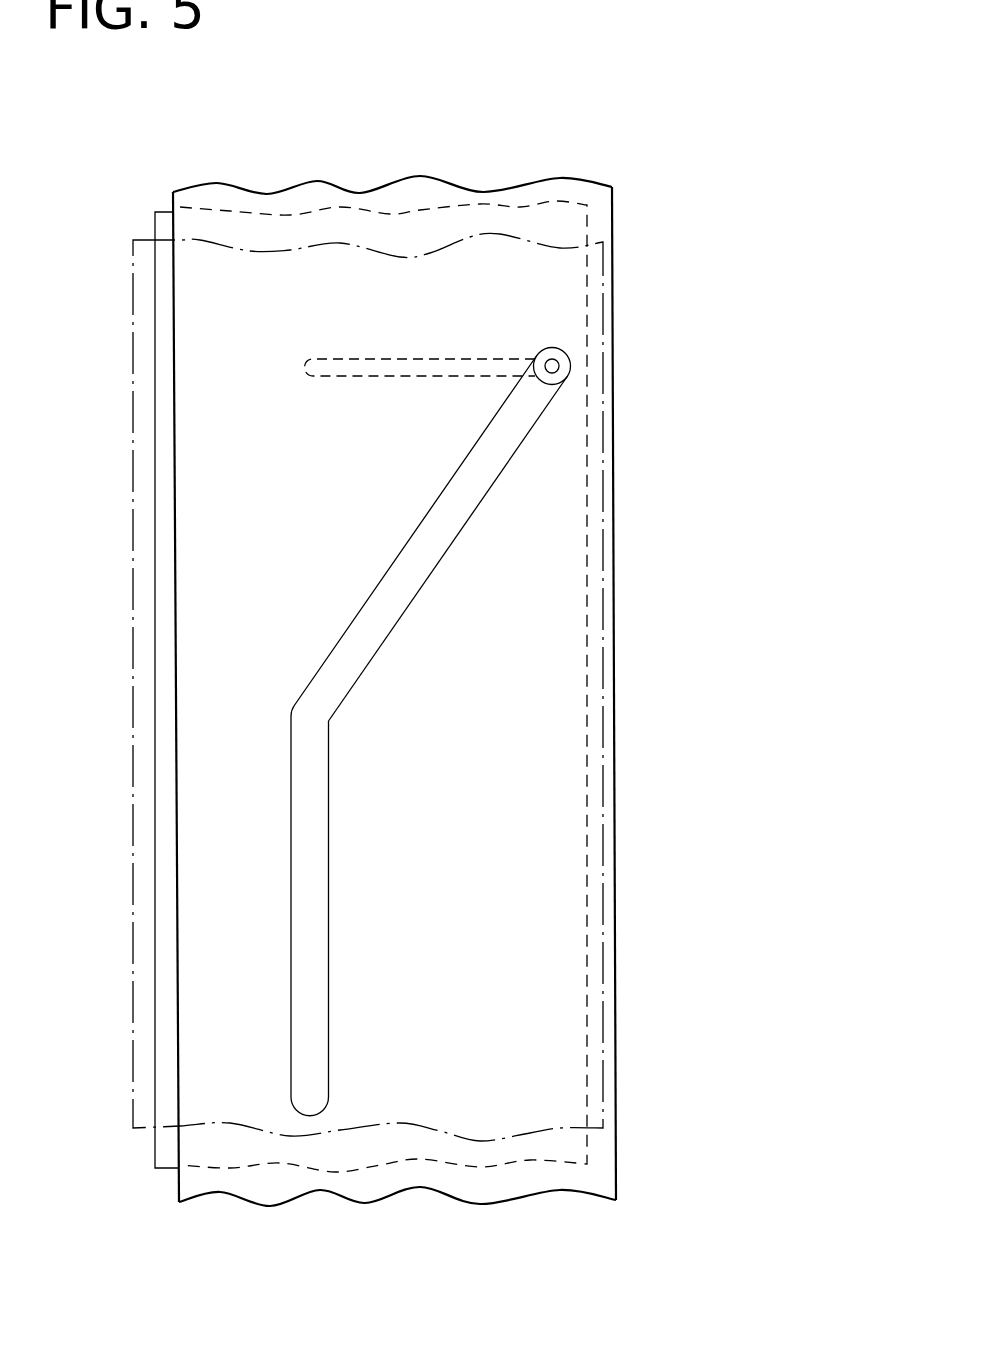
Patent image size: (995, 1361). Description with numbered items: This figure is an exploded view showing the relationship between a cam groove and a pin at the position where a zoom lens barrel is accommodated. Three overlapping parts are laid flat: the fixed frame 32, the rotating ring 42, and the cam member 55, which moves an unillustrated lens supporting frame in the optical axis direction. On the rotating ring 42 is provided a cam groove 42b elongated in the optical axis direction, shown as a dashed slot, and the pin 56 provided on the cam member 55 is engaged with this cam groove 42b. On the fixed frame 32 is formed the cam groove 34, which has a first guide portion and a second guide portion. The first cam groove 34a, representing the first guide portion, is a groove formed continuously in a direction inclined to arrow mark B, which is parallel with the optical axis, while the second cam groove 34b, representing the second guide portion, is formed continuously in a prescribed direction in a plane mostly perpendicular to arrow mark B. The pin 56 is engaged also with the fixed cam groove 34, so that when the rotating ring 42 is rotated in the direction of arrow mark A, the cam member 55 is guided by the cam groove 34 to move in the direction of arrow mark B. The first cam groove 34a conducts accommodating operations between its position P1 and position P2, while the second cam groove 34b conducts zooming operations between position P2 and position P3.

The fixed frame 32 is at (617, 946).
The cam groove 34 is at (529, 736).
The first cam groove 34a is at (370, 635).
The second cam groove 34b is at (317, 827).
The rotating ring 42 is at (155, 850).
The cam groove 42b is at (416, 359).
The cam member 55 is at (133, 563).
The pin 56 is at (567, 353).
The position P1 is at (552, 366).
The position P2 is at (310, 720).
The position P3 is at (310, 1097).
The arrow mark A is at (652, 978).
The arrow mark B is at (617, 1248).